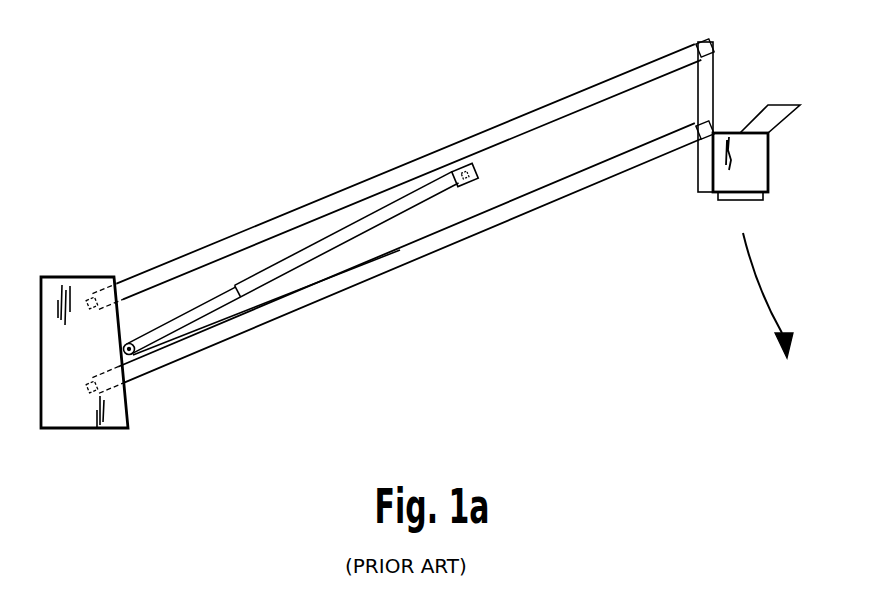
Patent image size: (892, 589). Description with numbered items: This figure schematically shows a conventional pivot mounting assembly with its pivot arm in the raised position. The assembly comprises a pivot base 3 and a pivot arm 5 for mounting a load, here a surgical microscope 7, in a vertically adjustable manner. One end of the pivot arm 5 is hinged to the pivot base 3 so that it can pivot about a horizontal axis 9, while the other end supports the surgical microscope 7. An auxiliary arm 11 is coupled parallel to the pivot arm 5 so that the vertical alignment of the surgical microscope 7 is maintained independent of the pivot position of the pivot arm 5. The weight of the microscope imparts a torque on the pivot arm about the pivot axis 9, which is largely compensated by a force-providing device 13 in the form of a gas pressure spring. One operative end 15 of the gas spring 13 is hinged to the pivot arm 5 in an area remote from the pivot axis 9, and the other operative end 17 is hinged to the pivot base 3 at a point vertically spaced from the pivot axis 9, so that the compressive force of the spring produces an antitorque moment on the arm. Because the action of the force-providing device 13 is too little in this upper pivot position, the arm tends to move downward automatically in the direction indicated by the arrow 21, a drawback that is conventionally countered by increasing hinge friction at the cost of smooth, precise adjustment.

The pivot base 3 is at (57, 277).
The pivot arm 5 is at (572, 96).
The surgical microscope 7 is at (770, 170).
The horizontal axis 9 is at (92, 297).
The auxiliary arm 11 is at (562, 198).
The force-providing device 13 is at (335, 248).
The operative end 15 is at (461, 166).
The operative end 17 is at (130, 343).
The arrow 21 is at (773, 287).